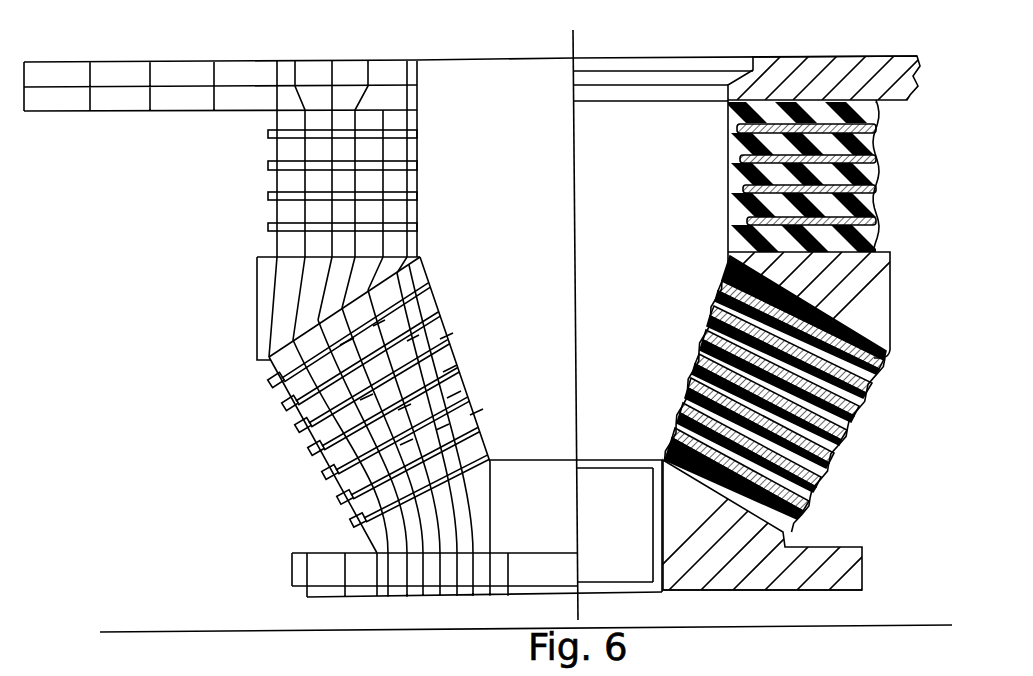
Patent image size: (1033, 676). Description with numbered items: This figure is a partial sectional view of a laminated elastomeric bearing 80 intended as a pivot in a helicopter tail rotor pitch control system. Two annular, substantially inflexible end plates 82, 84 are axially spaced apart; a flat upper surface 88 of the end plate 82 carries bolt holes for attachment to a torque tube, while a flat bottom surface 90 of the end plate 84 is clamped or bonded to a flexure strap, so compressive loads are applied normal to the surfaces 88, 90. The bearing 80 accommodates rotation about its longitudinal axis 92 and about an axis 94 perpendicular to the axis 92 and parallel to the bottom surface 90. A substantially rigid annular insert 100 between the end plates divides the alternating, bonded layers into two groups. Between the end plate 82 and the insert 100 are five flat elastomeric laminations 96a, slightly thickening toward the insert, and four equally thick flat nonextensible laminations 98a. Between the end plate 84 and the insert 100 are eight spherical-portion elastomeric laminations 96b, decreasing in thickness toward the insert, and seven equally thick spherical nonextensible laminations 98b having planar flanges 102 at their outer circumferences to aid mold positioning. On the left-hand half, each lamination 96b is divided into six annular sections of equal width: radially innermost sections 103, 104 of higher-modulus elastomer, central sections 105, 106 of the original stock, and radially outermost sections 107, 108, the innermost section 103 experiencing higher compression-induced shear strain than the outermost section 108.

The laminated elastomeric bearing 80 is at (182, 41).
The end plate 82 is at (838, 54).
The end plate 84 is at (865, 566).
The flat upper surface 88 is at (784, 40).
The flat bottom surface 90 is at (752, 592).
The longitudinal axis 92 is at (580, 42).
The axis 94 is at (888, 626).
The elastomeric laminations 96a is at (880, 196).
The elastomeric laminations 96b is at (872, 398).
The nonextensible laminations 98a is at (880, 128).
The nonextensible laminations 98b is at (884, 370).
The rigid insert 100 is at (850, 293).
The planar flanges 102 is at (825, 486).
The radially innermost circumferential section 103 is at (440, 380).
The radially inner section 104 is at (415, 337).
The central section 105 is at (385, 314).
The central section 106 is at (314, 385).
The radially outer section 107 is at (320, 440).
The radially outermost circumferential section 108 is at (372, 497).